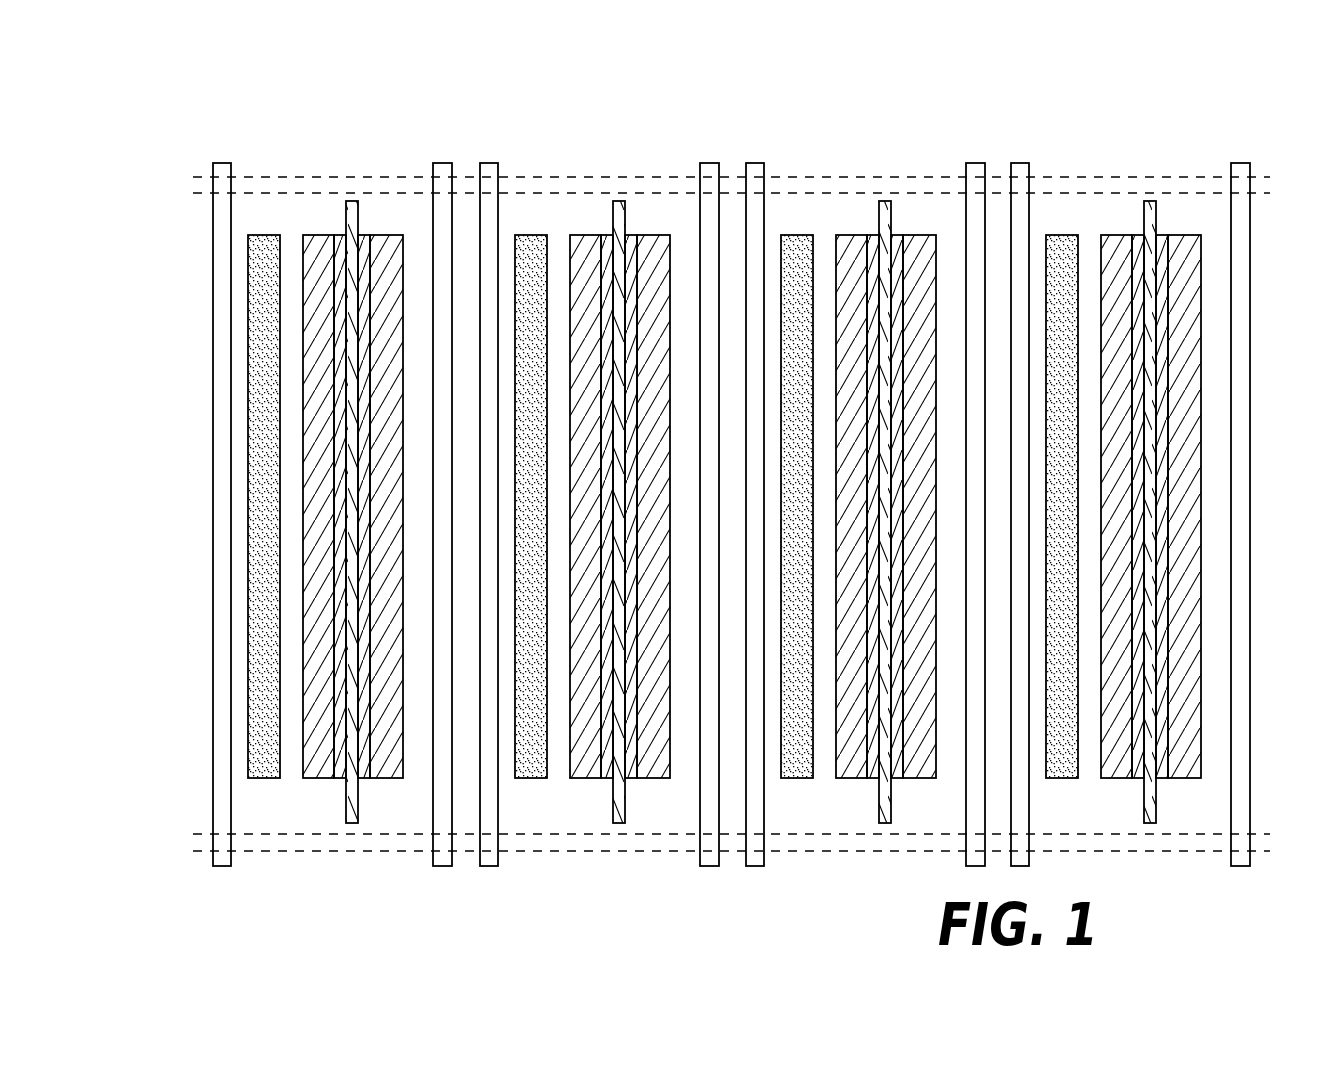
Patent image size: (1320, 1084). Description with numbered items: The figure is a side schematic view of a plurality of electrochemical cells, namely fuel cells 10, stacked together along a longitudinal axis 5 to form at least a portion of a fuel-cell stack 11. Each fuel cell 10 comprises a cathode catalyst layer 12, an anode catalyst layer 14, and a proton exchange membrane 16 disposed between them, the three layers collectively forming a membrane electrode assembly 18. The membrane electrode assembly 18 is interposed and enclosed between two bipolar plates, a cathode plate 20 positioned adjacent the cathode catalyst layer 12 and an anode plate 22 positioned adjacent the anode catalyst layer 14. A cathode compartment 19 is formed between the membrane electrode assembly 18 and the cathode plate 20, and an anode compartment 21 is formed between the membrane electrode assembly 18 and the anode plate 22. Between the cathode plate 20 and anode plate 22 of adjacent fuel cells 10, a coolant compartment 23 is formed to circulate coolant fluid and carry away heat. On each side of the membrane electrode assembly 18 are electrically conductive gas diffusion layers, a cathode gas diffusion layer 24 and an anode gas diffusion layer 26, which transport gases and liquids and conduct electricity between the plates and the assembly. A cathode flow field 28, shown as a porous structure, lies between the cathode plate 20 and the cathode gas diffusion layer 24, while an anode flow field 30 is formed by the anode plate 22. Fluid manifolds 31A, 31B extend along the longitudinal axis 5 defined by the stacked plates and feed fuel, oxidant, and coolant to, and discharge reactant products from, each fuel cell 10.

The longitudinal axis 5 is at (583, 67).
The fuel cell 10 is at (435, 138).
The fuel-cell stack 11 is at (160, 129).
The cathode catalyst layer 12 is at (607, 778).
The anode catalyst layer 14 is at (632, 778).
The proton exchange membrane 16 is at (619, 823).
The membrane electrode assembly 18 is at (751, 582).
The cathode compartment 19 is at (558, 196).
The cathode plate 20 is at (487, 866).
The anode compartment 21 is at (674, 207).
The anode plate 22 is at (441, 866).
The coolant compartment 23 is at (467, 160).
The cathode gas diffusion layer 24 is at (578, 778).
The anode gas diffusion layer 26 is at (655, 778).
The cathode flow field 28 is at (522, 778).
The anode flow field 30 is at (699, 741).
The fluid manifold 31A is at (197, 193).
The fluid manifold 31B is at (197, 834).